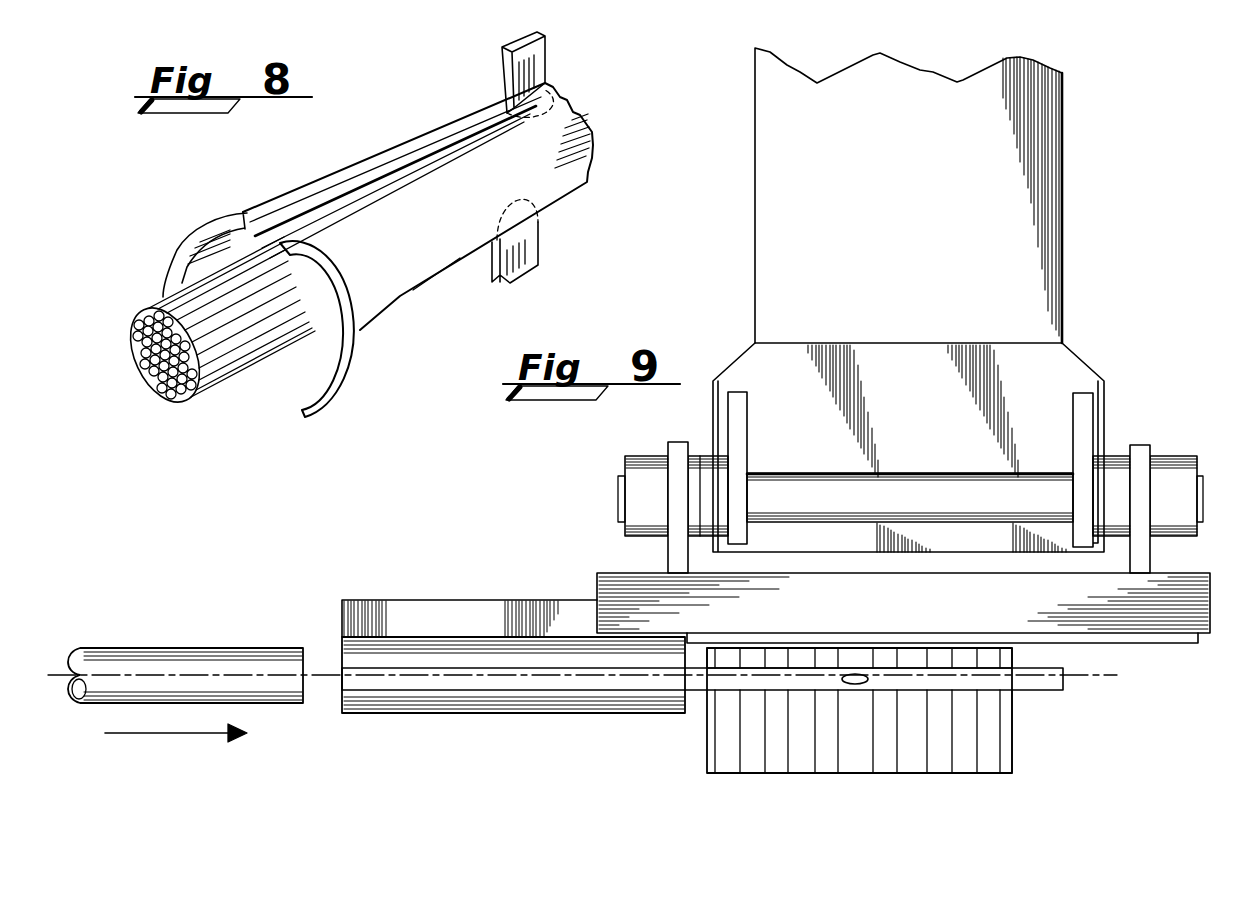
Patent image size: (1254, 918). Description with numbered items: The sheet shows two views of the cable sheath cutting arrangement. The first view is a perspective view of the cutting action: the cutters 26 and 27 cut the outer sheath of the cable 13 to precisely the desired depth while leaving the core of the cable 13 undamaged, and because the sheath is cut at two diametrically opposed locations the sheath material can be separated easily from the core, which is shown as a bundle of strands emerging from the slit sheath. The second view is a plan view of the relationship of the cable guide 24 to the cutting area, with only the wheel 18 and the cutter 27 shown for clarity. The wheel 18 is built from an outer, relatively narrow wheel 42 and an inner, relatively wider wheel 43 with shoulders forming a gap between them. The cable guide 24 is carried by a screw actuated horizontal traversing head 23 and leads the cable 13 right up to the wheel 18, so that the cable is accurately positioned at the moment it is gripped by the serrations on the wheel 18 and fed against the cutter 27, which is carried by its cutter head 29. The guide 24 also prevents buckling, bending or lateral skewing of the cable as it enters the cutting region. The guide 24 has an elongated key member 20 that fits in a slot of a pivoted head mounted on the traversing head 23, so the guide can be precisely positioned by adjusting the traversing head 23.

In FIG. 8, the cable 13 is at (588, 167).
In FIG. 9, the cable 13 is at (195, 648).
In FIG. 9, the wheel 18 is at (707, 727).
In FIG. 9, the elongated key member 20 is at (488, 600).
In FIG. 9, the screw actuated horizontal traversing head 23 is at (765, 228).
In FIG. 9, the cable guide 24 is at (513, 713).
In FIG. 8, the cutter 26 is at (546, 58).
In FIG. 8, the cutter 27 is at (538, 242).
In FIG. 9, the cutter 27 is at (855, 685).
In FIG. 9, the cutter head 29 is at (1062, 690).
In FIG. 9, the narrow wheel 42 is at (1013, 653).
In FIG. 9, the wider wheel 43 is at (1013, 727).